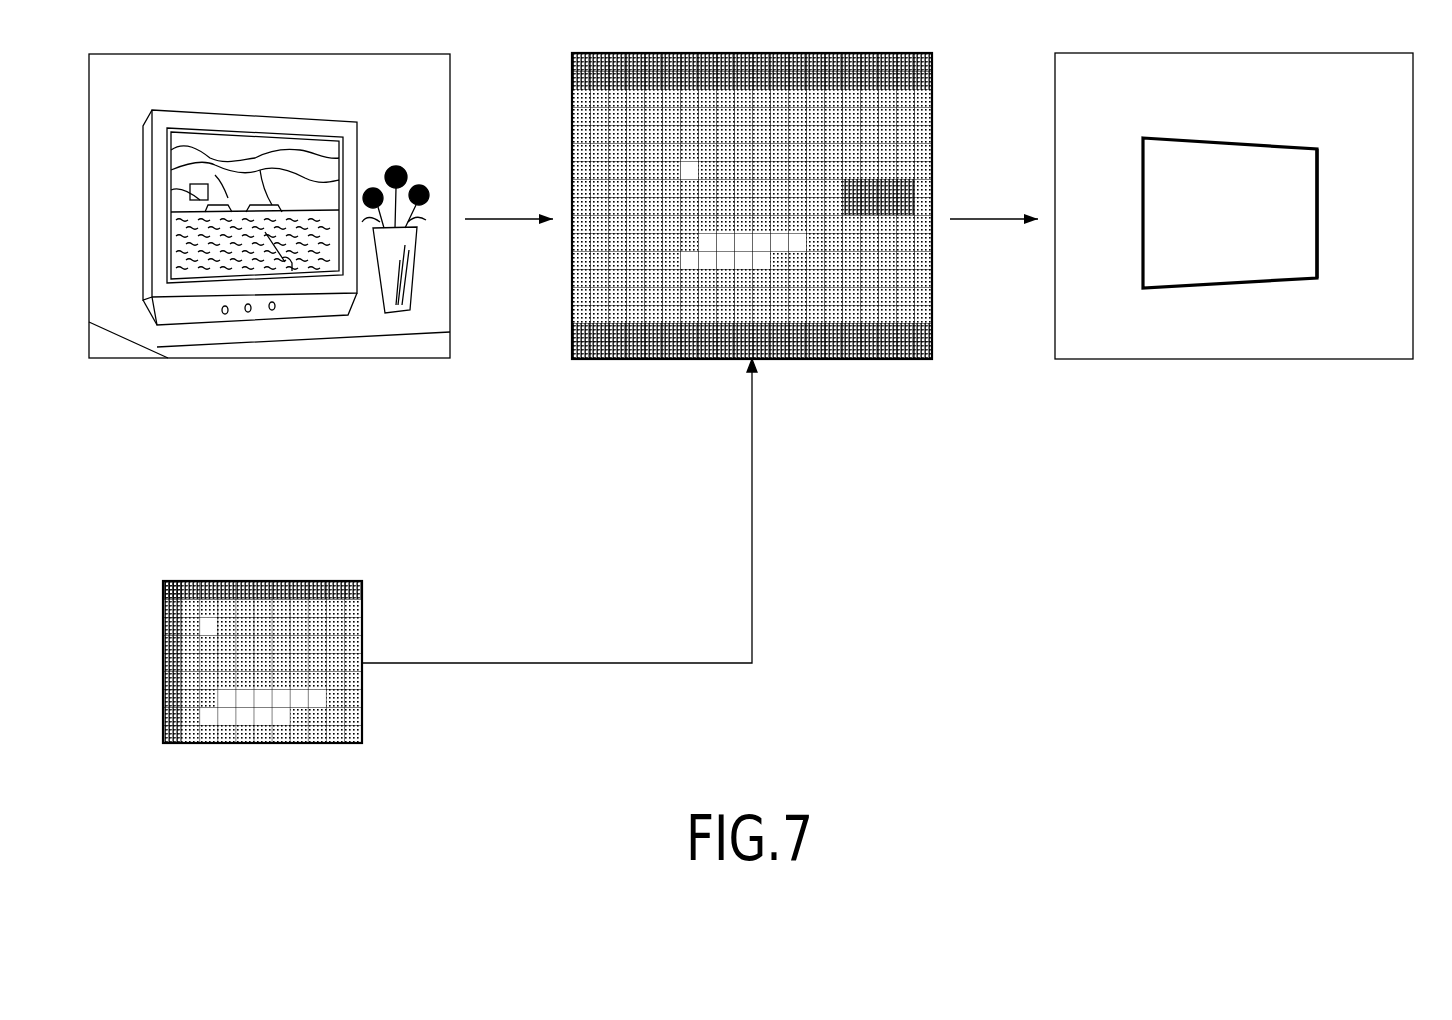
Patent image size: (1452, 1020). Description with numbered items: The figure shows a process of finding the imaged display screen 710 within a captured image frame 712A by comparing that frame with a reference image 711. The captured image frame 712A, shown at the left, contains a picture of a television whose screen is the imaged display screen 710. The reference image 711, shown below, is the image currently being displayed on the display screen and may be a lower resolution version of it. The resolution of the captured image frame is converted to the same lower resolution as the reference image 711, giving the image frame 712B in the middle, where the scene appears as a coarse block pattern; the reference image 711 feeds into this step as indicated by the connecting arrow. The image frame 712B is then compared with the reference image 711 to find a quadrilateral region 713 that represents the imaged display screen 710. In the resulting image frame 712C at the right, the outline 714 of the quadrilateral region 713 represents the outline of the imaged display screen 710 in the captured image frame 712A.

The imaged display screen 710 is at (218, 143).
The reference image 711 is at (243, 580).
The captured image frame 712A is at (287, 234).
The image frame 712B is at (858, 359).
The resulting image frame 712C is at (1252, 233).
The quadrilateral region 713 is at (1267, 251).
The outline 714 is at (1318, 185).